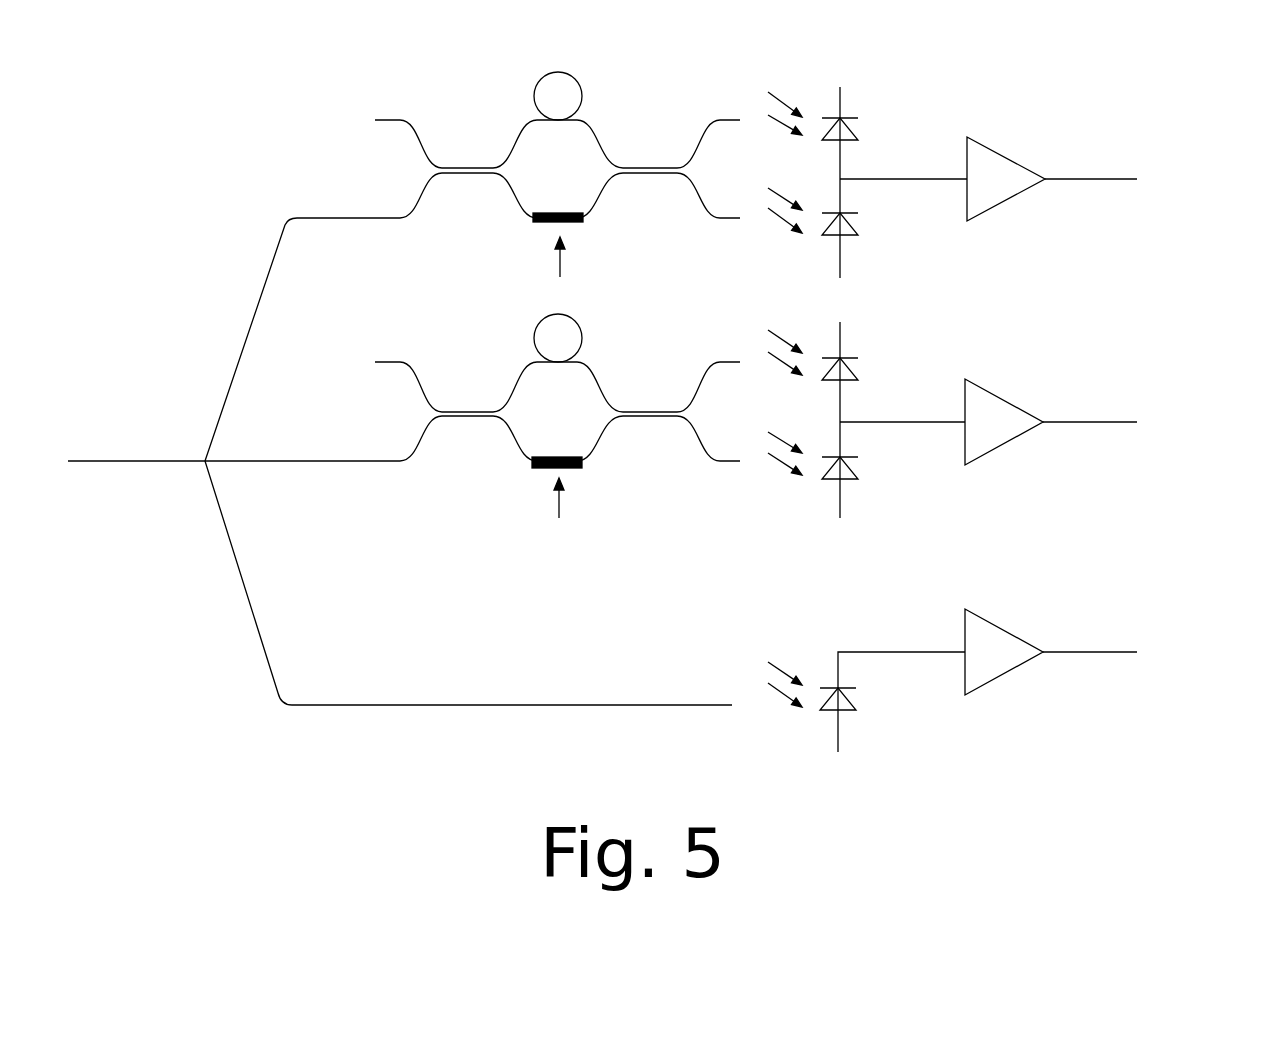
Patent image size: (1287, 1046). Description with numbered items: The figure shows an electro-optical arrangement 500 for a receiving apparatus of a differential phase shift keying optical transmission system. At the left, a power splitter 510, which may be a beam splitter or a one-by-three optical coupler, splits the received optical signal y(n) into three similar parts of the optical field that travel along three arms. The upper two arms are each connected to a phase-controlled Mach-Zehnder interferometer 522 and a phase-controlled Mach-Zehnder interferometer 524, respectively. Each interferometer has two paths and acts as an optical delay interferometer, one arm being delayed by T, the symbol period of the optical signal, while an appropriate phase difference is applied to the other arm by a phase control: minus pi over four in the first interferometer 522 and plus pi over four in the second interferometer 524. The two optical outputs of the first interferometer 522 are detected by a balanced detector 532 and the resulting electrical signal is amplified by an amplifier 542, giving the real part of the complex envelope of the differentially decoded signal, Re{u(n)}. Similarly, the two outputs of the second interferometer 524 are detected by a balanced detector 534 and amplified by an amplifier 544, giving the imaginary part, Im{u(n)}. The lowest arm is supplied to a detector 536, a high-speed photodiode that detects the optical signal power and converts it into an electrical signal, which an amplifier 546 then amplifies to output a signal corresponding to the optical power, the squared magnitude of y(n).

The electro-optical arrangement 500 is at (203, 145).
The power splitter 510 is at (100, 381).
The phase-controlled Mach-Zehnder interferometer 522 is at (435, 66).
The phase-controlled Mach-Zehnder interferometer 524 is at (428, 592).
The balanced detector 532 is at (822, 57).
The balanced detector 534 is at (805, 557).
The detector 536 is at (825, 796).
The amplifier 542 is at (1008, 145).
The amplifier 544 is at (1008, 395).
The amplifier 546 is at (1008, 620).